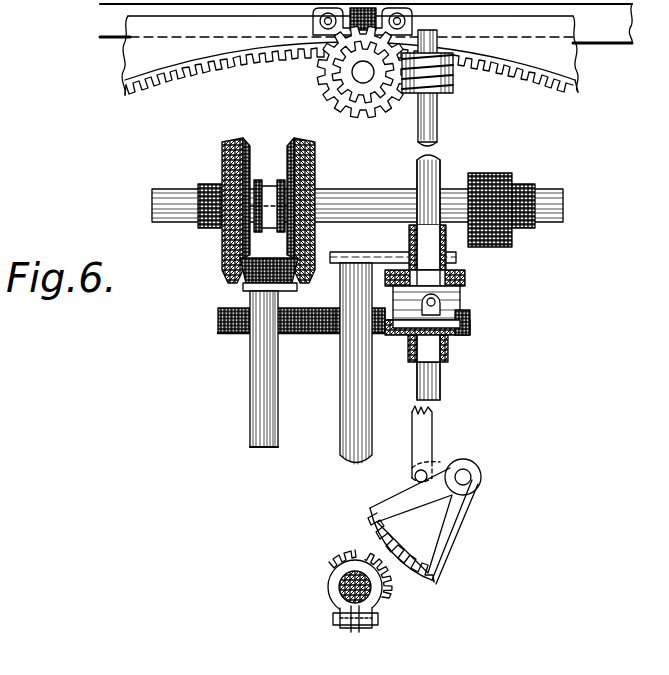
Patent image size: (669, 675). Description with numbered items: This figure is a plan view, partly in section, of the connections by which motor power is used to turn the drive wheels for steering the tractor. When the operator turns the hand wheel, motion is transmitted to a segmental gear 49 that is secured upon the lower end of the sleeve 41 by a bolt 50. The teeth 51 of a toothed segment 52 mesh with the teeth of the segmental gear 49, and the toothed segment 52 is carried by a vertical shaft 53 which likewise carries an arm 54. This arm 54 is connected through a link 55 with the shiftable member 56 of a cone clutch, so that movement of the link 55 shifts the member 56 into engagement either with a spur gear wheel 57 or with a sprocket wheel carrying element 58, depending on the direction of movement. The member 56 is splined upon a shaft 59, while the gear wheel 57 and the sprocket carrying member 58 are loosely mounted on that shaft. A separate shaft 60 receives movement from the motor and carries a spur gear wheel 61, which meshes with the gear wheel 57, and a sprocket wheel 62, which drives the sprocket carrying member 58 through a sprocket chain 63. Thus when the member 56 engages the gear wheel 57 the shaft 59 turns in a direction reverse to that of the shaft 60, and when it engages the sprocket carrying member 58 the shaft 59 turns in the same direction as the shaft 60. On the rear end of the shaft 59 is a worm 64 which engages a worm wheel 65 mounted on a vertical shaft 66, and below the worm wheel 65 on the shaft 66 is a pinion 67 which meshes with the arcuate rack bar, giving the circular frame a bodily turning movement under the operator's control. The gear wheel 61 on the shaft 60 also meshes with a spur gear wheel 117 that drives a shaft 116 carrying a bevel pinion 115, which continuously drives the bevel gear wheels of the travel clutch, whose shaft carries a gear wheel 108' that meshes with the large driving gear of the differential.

The pinion 67 is at (333, 88).
The vertical shaft 66 is at (361, 80).
The worm wheel 65 is at (362, 89).
The worm 64 is at (454, 86).
The gear wheel 108' is at (499, 192).
The bevel pinion 115 is at (288, 280).
The spur gear wheel 117 is at (232, 333).
The spur gear wheel 61 is at (345, 333).
The shaft 116 is at (262, 405).
The sprocket wheel 62 is at (352, 263).
The sprocket chain 63 is at (410, 264).
The shaft 60 is at (352, 405).
The shaft 59 is at (432, 378).
The sprocket wheel carrying element 58 is at (466, 275).
The shiftable member 56 is at (461, 298).
The spur gear wheel 57 is at (460, 330).
The link 55 is at (433, 420).
The arm 54 is at (428, 471).
The vertical shaft 53 is at (470, 477).
The toothed segment 52 is at (445, 537).
The teeth 51 is at (436, 590).
The segmental gear 49 is at (386, 590).
The sleeve 41 is at (340, 593).
The bolt 50 is at (352, 630).